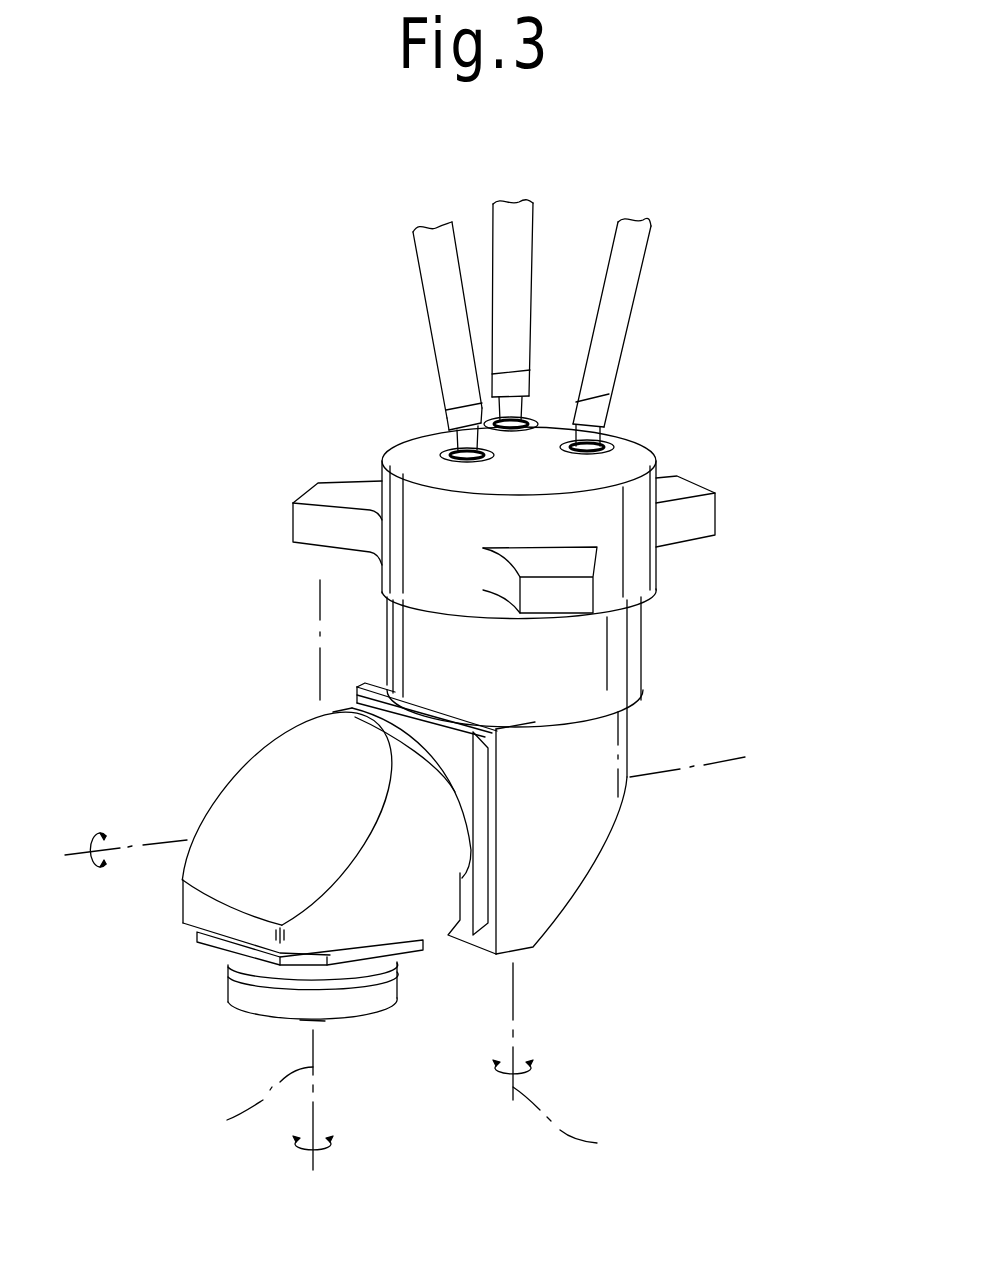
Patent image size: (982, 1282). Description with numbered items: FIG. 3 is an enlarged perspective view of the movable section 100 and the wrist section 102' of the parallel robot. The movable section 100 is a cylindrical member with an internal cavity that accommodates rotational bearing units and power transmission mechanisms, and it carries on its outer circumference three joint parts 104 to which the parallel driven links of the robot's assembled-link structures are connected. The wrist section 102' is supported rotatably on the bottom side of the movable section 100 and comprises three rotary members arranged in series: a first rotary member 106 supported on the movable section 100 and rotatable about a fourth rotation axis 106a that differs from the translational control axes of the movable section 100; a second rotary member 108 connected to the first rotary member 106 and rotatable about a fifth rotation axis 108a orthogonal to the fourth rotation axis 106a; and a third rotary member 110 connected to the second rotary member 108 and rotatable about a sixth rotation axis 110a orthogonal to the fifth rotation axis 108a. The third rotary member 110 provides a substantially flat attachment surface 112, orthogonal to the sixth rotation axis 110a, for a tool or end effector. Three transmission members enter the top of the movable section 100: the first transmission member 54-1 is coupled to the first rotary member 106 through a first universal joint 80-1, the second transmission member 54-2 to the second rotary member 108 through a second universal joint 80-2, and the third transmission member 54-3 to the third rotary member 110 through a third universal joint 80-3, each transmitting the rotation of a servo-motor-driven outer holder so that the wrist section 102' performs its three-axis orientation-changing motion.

The first transmission member 54-1 is at (633, 257).
The second transmission member 54-2 is at (497, 235).
The third transmission member 54-3 is at (420, 251).
The first universal joint 80-1 is at (600, 427).
The second universal joint 80-2 is at (532, 382).
The third universal joint 80-3 is at (450, 422).
The movable section 100 is at (388, 480).
The wrist section 102' is at (662, 1009).
The joint part 104 is at (293, 527).
The first rotary member 106 is at (580, 842).
The fourth rotation axis 106a is at (585, 1062).
The second rotary member 108 is at (258, 778).
The fifth rotation axis 108a is at (172, 840).
The third rotary member 110 is at (233, 985).
The sixth rotation axis 110a is at (241, 1100).
The attachment surface 112 is at (350, 1018).